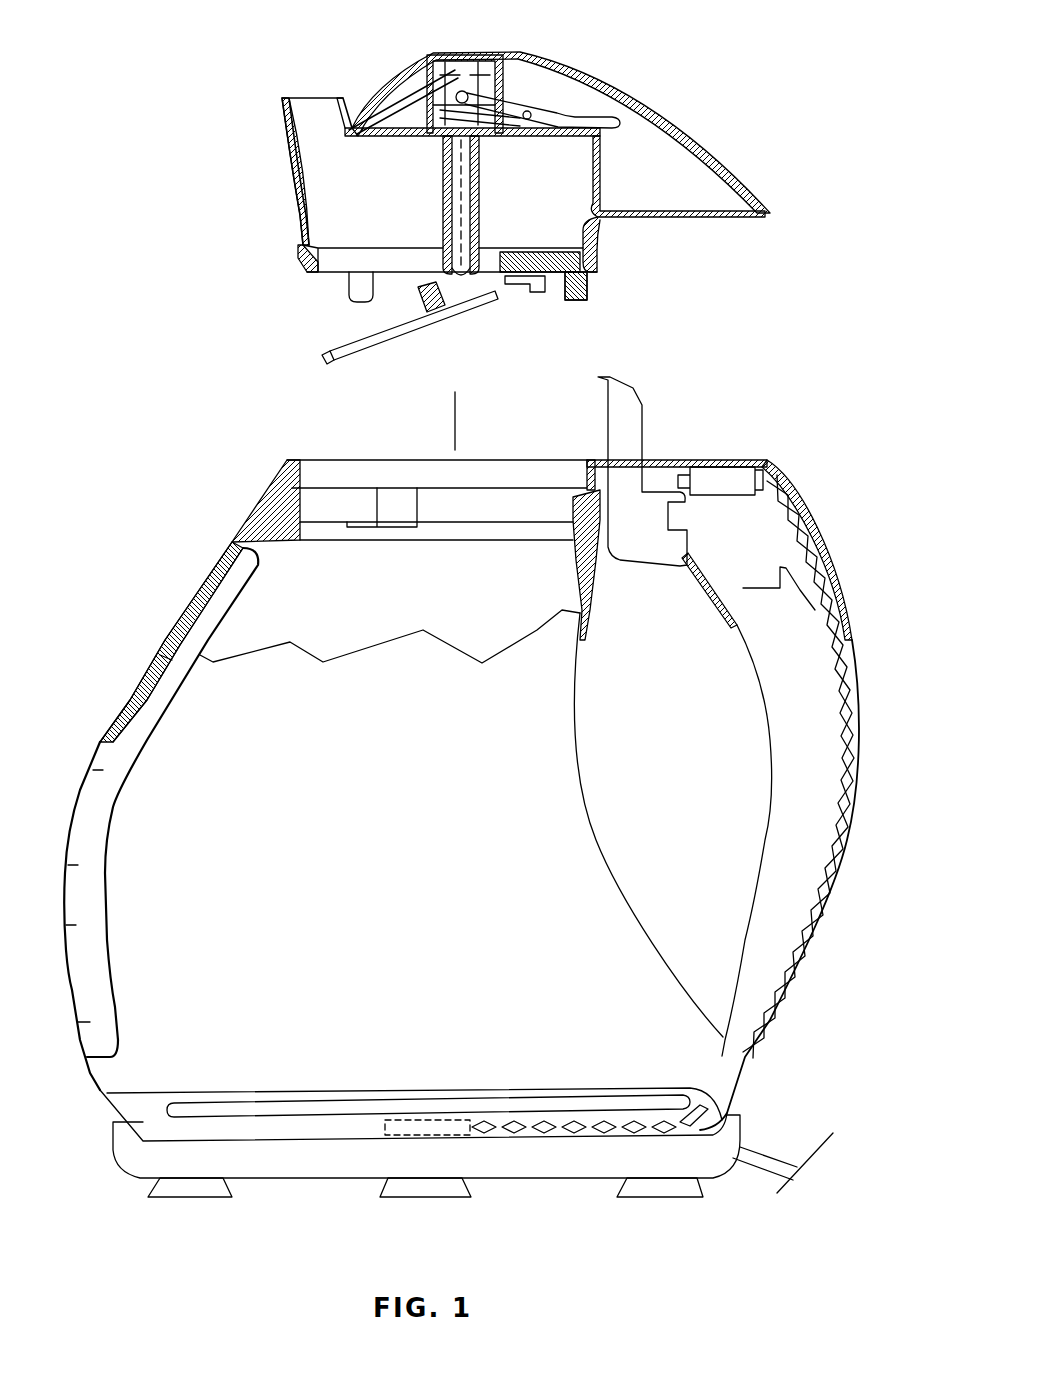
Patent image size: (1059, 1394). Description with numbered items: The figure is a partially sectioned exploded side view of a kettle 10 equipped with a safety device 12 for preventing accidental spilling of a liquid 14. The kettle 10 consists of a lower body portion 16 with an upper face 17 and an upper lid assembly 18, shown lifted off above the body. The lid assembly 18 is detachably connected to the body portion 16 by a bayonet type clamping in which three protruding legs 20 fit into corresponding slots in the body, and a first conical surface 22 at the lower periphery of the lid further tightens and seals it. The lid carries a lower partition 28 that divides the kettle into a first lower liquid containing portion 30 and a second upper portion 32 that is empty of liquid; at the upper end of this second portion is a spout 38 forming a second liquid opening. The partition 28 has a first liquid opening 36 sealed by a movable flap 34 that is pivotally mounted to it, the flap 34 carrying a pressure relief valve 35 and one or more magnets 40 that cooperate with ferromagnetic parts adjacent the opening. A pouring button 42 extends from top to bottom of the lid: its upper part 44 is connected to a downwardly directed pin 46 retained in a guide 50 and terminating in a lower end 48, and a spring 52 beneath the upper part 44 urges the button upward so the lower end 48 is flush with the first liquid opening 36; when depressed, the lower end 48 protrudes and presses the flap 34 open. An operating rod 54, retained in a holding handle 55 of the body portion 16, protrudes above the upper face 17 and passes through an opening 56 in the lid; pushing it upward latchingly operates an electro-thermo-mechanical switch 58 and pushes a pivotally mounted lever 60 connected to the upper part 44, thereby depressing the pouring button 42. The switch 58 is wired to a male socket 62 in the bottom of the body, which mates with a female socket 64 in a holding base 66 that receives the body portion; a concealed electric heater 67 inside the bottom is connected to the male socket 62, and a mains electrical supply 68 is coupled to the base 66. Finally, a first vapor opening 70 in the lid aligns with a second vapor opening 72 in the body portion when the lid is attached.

The kettle 10 is at (212, 498).
The safety device 12 is at (215, 310).
The liquid 14 is at (190, 720).
The lower body portion 16 is at (168, 610).
The upper face 17 is at (672, 460).
The upper lid assembly 18 is at (260, 117).
The protruding legs 20 is at (357, 290).
The first conical surface 22 is at (300, 258).
The lower partition 28 is at (340, 243).
The first lower liquid containing portion 30 is at (140, 820).
The second upper portion 32 is at (330, 150).
The movable flap 34 is at (362, 343).
The pressure relief valve 35 is at (418, 294).
The first liquid opening 36 is at (330, 265).
The spout 38 is at (318, 104).
The magnets 40 is at (322, 362).
The pouring button 42 is at (483, 68).
The upper part 44 is at (446, 70).
The pin 46 is at (478, 185).
The lower end 48 is at (466, 276).
The guide 50 is at (457, 276).
The spring 52 is at (452, 120).
The operating rod 54 is at (647, 553).
The holding handle 55 is at (773, 670).
The opening 56 is at (640, 218).
The electro-thermo-mechanical switch 58 is at (730, 475).
The lever 60 is at (610, 126).
The male socket 62 is at (432, 1118).
The female socket 64 is at (400, 1136).
The holding base 66 is at (148, 1168).
The concealed electric heater 67 is at (200, 1100).
The mains electrical supply 68 is at (772, 1160).
The first vapor opening 70 is at (592, 236).
The second vapor opening 72 is at (588, 478).